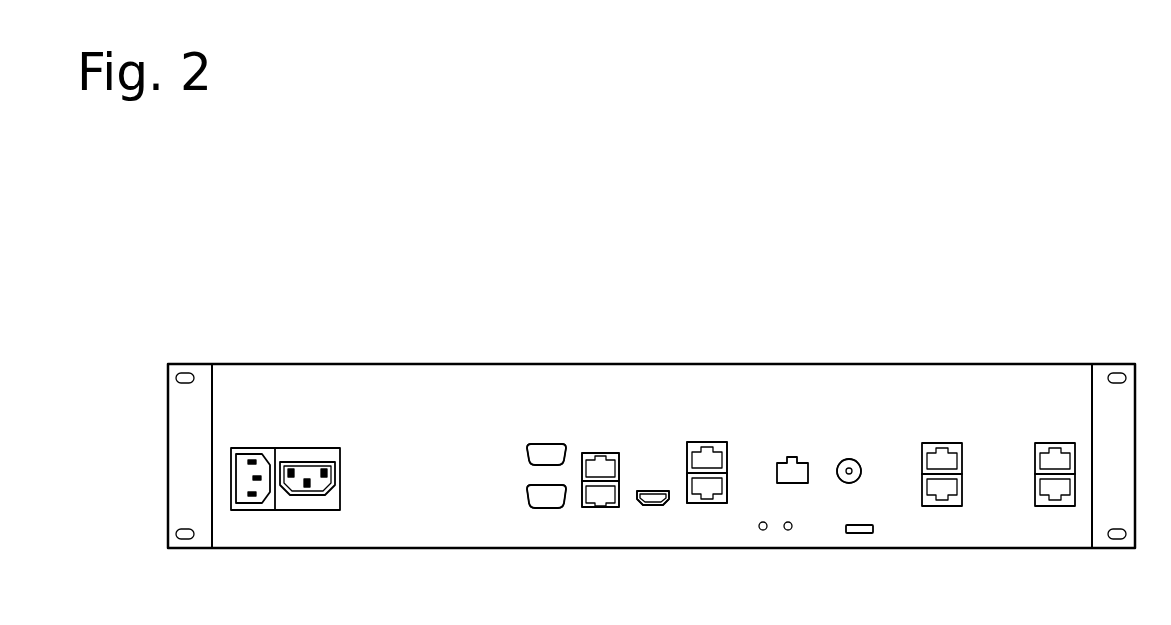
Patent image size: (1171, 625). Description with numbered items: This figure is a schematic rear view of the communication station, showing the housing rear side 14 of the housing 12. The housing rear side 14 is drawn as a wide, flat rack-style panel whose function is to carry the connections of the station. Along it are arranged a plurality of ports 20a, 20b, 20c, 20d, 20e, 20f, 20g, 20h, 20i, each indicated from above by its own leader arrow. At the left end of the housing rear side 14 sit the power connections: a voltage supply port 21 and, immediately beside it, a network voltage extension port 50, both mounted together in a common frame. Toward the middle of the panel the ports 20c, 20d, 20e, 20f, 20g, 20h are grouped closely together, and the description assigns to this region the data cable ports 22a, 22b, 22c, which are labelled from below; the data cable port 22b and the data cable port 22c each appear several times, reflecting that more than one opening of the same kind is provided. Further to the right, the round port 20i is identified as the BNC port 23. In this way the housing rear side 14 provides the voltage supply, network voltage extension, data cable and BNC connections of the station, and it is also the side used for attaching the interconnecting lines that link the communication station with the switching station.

The housing rear side 14 is at (983, 322).
The housing 12 is at (395, 527).
The voltage supply port 21 is at (260, 503).
The network voltage extension port 50 is at (306, 495).
The port 20a is at (255, 433).
The port 20b is at (327, 434).
The port 20c is at (550, 437).
The port 20d is at (568, 476).
The port 20e is at (620, 440).
The port 20f is at (658, 486).
The port 20g is at (730, 433).
The port 20h is at (738, 483).
The port 20i is at (857, 452).
The data cable port 22a is at (527, 458).
The data cable port 22b is at (560, 508).
The data cable port 22c is at (712, 503).
The BNC port 23 is at (858, 480).